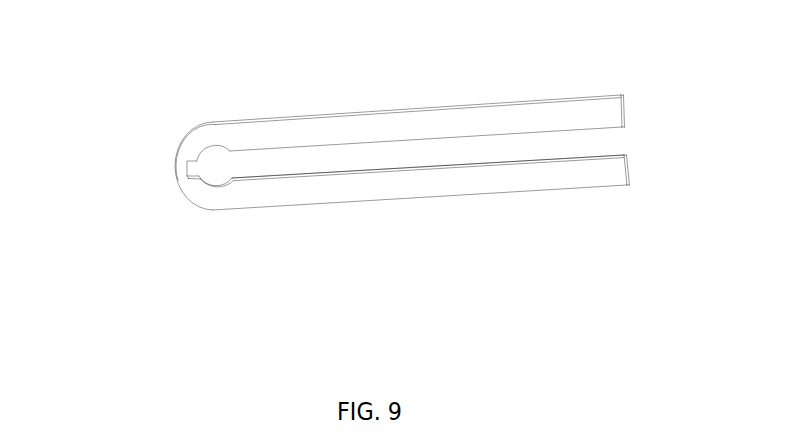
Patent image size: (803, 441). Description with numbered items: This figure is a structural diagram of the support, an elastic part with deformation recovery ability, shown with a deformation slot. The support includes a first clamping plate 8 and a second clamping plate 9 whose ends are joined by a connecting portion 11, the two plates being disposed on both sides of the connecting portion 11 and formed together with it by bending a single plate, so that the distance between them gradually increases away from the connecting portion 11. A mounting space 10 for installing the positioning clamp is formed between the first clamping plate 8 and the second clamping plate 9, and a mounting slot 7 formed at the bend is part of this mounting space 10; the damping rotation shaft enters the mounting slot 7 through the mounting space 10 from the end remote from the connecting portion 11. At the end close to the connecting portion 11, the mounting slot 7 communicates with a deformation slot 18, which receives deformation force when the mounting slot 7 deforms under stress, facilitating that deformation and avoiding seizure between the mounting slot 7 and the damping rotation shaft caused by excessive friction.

The mounting slot 7 is at (219, 170).
The first clamping plate 8 is at (405, 128).
The second clamping plate 9 is at (453, 185).
The mounting space 10 is at (555, 137).
The connecting portion 11 is at (193, 188).
The deformation slot 18 is at (189, 163).